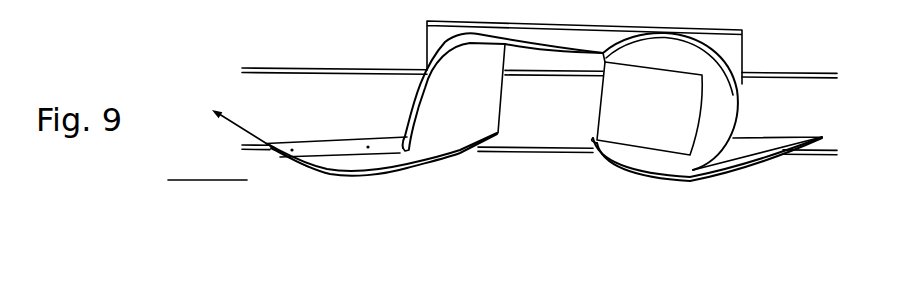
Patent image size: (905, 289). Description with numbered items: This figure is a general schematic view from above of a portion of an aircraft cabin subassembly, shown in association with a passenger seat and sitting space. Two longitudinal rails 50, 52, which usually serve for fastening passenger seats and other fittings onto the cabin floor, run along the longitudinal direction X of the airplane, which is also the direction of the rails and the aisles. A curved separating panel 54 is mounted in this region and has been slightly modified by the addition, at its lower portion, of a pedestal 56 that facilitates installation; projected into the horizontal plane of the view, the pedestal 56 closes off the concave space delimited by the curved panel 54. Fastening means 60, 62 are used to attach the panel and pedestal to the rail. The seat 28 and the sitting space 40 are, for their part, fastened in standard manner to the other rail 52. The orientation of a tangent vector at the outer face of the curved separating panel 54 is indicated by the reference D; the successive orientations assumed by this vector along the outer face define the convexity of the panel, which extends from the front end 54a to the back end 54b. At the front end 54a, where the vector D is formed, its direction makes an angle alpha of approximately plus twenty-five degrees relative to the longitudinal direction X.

The longitudinal rail 52 is at (262, 68).
The longitudinal rail 50 is at (532, 152).
The sitting space 40 is at (469, 115).
The pedestal 56 is at (340, 158).
The separating panel 54 is at (404, 174).
The front end of the panel 54a is at (283, 156).
The back end of the panel 54b is at (497, 142).
The fastening means 60 is at (368, 148).
The fastening means 62 is at (295, 149).
The seat 28 is at (647, 122).
The longitudinal direction X is at (176, 181).
The tangent vector D is at (245, 135).